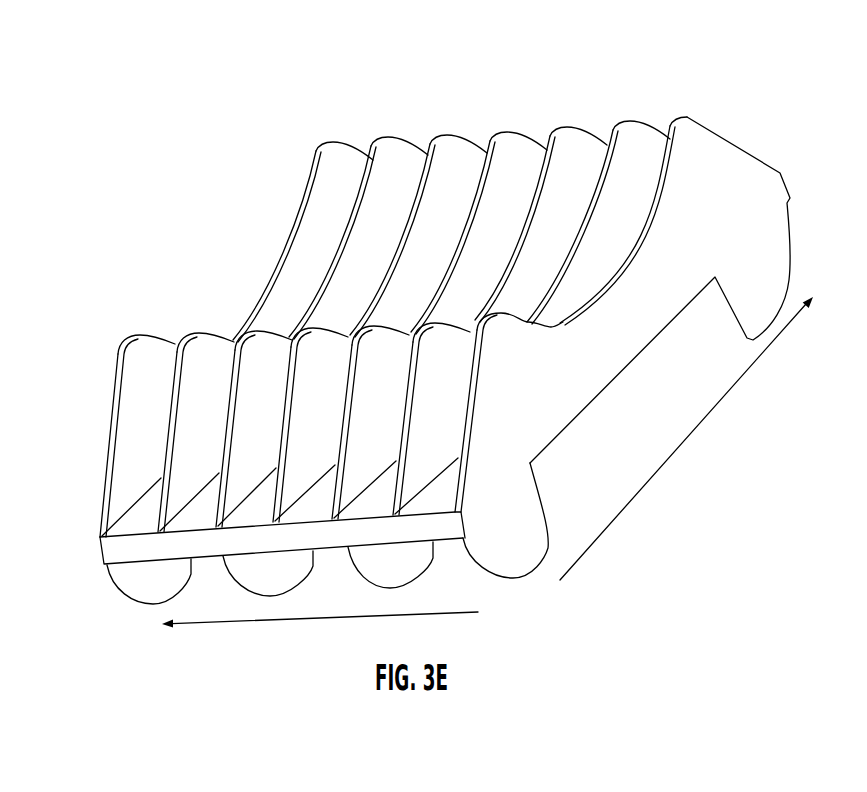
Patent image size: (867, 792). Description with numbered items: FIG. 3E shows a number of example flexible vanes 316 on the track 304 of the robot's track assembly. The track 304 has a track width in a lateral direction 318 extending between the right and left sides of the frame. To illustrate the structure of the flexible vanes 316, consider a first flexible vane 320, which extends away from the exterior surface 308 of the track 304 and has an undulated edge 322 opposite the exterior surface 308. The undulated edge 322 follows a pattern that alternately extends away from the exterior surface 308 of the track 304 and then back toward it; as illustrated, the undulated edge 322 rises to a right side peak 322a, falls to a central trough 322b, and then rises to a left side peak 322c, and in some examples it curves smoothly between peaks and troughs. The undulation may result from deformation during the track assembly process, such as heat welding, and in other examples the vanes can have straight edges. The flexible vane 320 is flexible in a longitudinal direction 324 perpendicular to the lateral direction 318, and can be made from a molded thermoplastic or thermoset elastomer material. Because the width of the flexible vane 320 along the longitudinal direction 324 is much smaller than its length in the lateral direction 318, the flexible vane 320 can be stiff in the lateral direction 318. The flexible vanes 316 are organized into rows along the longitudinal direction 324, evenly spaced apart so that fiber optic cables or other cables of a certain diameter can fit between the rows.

The track 304 is at (101, 558).
The exterior surface 308 is at (313, 507).
The flexible vanes 316 is at (229, 96).
The lateral direction 318 is at (627, 510).
The first flexible vane 320 is at (154, 447).
The undulated edge 322 is at (110, 437).
The right side peak 322a is at (130, 341).
The central trough 322b is at (262, 313).
The left side peak 322c is at (318, 150).
The longitudinal direction 324 is at (293, 620).